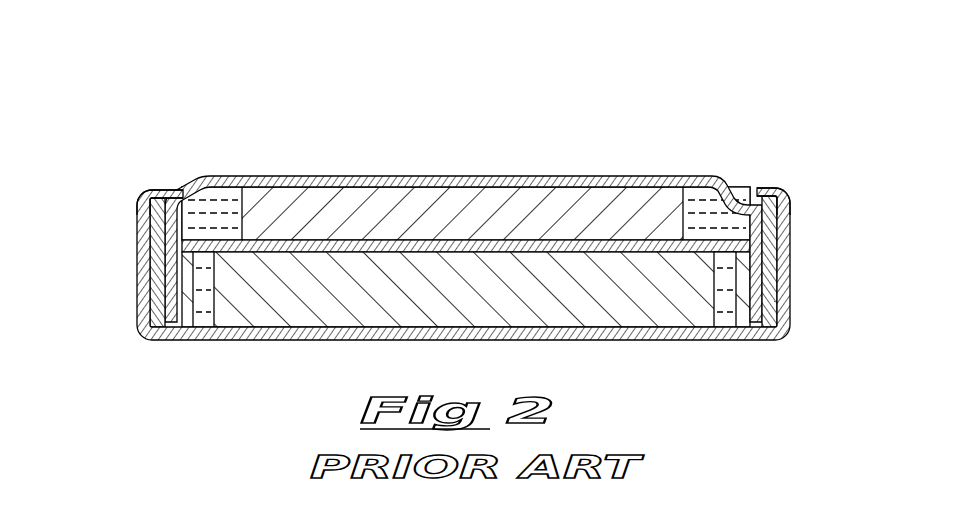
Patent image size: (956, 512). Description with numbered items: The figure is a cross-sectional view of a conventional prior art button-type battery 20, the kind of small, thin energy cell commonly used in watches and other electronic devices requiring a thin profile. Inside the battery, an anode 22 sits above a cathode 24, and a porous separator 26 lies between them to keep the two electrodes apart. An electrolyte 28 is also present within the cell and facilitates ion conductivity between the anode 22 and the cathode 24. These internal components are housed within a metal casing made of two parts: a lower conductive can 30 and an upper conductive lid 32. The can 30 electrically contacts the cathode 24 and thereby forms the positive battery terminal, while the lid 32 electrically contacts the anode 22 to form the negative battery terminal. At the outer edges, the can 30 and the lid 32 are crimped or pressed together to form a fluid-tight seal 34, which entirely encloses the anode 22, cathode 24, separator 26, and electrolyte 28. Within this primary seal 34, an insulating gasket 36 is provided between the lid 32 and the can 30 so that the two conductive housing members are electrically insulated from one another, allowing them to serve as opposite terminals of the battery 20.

The button-type battery 20 is at (400, 114).
The anode 22 is at (440, 207).
The cathode 24 is at (605, 313).
The porous separator 26 is at (330, 245).
The electrolyte 28 is at (704, 205).
The lower conductive can 30 is at (725, 333).
The upper conductive lid 32 is at (545, 180).
The fluid-tight seal 34 is at (136, 180).
The insulating gasket 36 is at (158, 210).